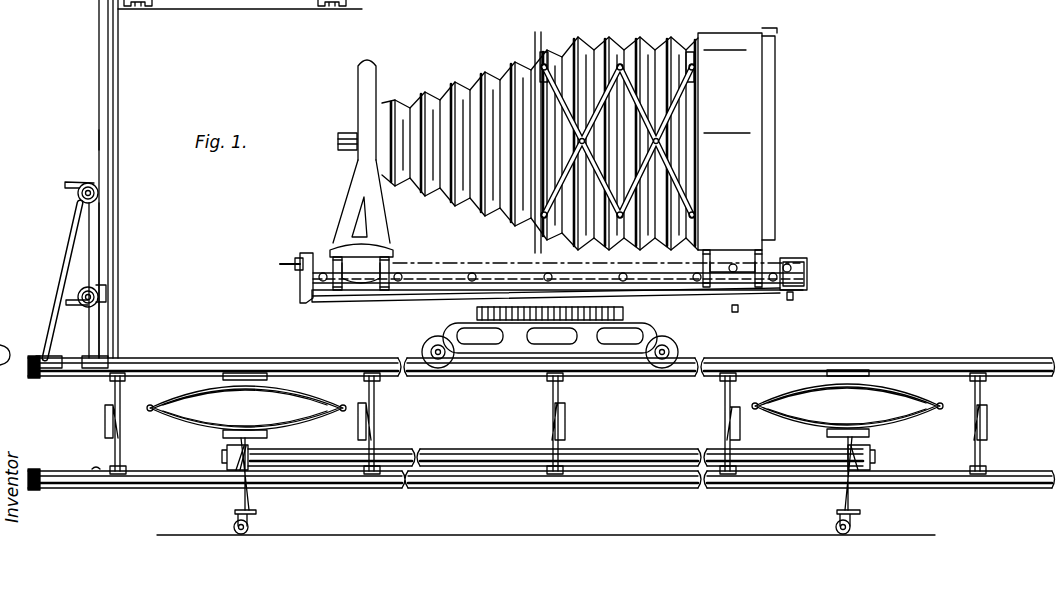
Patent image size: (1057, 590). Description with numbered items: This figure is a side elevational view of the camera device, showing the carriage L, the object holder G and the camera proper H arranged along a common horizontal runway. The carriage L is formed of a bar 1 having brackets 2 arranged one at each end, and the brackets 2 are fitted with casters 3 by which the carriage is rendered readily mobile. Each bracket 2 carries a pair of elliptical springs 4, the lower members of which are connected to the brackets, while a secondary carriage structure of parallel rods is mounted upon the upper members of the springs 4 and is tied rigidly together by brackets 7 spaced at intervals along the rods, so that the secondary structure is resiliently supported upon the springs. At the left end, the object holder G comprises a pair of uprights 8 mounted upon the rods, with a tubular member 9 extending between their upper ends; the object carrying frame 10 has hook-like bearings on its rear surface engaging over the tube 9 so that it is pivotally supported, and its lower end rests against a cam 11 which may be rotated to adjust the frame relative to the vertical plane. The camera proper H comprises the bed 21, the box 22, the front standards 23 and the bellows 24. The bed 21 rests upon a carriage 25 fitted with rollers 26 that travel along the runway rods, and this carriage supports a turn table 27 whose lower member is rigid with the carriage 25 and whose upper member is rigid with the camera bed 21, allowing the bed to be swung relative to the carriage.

The bar 1 is at (470, 450).
The bracket 2 is at (249, 500).
The caster 3 is at (233, 522).
The elliptical spring 4 is at (188, 425).
The bracket 7 is at (110, 412).
The upright 8 is at (72, 247).
The tubular member 9 is at (80, 197).
The object carrying frame 10 is at (108, 90).
The cam 11 is at (100, 298).
The bed 21 is at (656, 288).
The box 22 is at (718, 44).
The front standard 23 is at (372, 98).
The bellows 24 is at (492, 76).
The carriage 25 is at (460, 335).
The roller 26 is at (438, 368).
The turn table 27 is at (477, 312).
The object holder G is at (108, 142).
The camera proper H is at (615, 136).
The carriage L is at (580, 450).